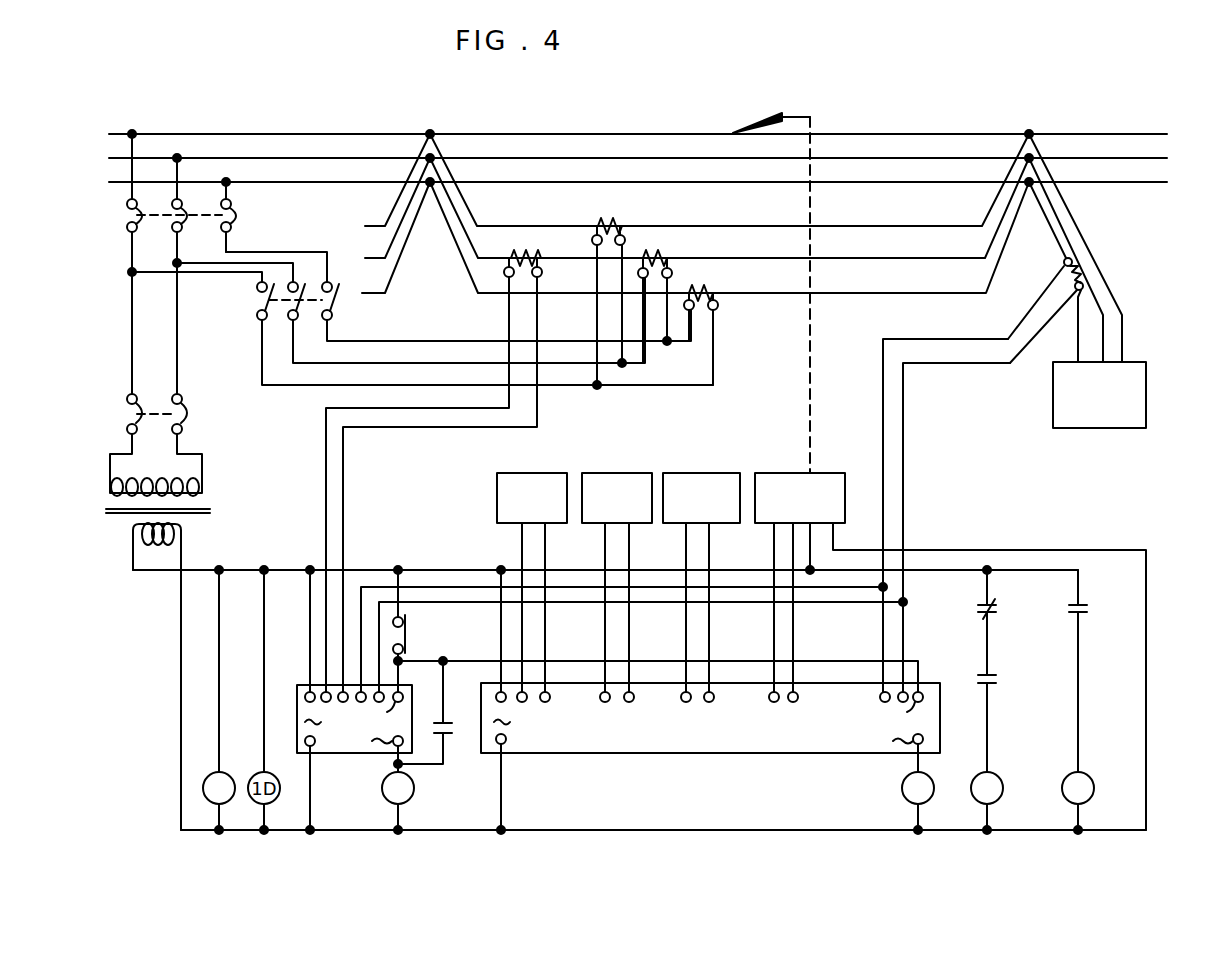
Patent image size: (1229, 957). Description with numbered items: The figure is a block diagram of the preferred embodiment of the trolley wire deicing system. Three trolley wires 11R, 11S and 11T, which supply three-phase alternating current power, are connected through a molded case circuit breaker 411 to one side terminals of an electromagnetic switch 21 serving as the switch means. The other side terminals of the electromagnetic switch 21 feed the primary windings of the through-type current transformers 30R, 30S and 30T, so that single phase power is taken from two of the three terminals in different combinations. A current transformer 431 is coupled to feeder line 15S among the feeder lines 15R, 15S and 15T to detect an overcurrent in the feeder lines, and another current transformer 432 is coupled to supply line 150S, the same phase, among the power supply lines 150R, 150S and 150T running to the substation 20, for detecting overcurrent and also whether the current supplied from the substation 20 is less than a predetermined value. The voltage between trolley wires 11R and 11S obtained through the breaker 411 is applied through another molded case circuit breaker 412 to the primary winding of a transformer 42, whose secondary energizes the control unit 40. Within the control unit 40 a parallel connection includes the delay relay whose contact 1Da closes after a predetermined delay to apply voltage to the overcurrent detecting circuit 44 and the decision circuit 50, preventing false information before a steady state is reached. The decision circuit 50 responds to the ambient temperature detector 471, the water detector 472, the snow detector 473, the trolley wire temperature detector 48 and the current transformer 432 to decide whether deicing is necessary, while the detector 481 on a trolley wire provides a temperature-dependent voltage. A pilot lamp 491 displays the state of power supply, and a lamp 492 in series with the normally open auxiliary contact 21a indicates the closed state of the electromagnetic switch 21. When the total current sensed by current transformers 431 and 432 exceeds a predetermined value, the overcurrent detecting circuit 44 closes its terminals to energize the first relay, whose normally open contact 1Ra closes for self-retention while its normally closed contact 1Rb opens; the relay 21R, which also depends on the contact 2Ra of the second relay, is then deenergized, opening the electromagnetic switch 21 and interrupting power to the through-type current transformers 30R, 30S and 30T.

The trolley wire 11R is at (278, 133).
The trolley wire 11S is at (284, 140).
The trolley wire 11T is at (284, 164).
The molded case circuit breaker 411 is at (232, 205).
The electromagnetic switch 21 is at (333, 312).
The molded case circuit breaker 412 is at (181, 403).
The transformer 42 is at (224, 514).
The trolley wire temperature detector 481 is at (760, 121).
The current transformer 431 is at (539, 258).
The through-type current transformer 30R is at (622, 224).
The through-type current transformer 30S is at (671, 258).
The through-type current transformer 30T is at (717, 306).
The feeder line 15R is at (744, 225).
The feeder line 15S is at (750, 257).
The feeder line 15T is at (752, 292).
The power supply line 150R is at (1067, 205).
The power supply line 150S is at (1073, 236).
The power supply line 150T is at (1083, 264).
The current transformer 432 is at (1062, 260).
The substation 20 is at (1143, 362).
The control unit 40 is at (988, 531).
The ambient temperature detector 471 is at (533, 473).
The water detector 472 is at (616, 473).
The snow detector 473 is at (700, 473).
The trolley wire temperature detector 48 is at (826, 473).
The contact of delay relay 1Da is at (408, 634).
The normally open contact of relay 1R 1Ra is at (443, 720).
The overcurrent detecting circuit 44 is at (343, 753).
The pilot lamp 491 is at (226, 770).
The decision circuit 50 is at (698, 747).
The normally closed contact of relay 1R 1Rb is at (998, 603).
The contact of relay 2R 2Ra is at (996, 677).
The relay 21R is at (990, 784).
The normally open auxiliary contact 21a is at (1084, 603).
The lamp 492 is at (1084, 786).